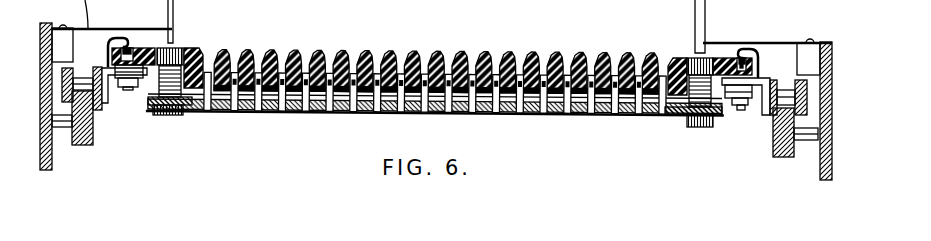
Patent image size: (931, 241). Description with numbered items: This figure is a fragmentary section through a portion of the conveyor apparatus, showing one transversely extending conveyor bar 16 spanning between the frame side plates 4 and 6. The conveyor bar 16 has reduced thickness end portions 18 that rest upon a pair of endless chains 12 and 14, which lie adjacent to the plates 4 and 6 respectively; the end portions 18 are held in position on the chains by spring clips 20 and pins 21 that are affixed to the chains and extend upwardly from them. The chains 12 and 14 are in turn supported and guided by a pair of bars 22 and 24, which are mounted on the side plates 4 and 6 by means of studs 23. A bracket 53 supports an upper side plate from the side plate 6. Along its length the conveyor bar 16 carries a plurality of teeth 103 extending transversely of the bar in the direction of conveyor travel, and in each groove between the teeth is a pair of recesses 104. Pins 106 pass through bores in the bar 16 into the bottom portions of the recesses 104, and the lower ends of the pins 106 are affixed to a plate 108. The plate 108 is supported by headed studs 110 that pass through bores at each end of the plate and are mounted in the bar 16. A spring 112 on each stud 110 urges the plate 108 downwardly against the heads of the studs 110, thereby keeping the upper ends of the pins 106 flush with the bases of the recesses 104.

The frame side plate 4 is at (45, 168).
The frame side plate 6 is at (822, 176).
The endless chain 12 is at (101, 108).
The endless chain 14 is at (772, 116).
The conveyor bar 16 is at (188, 49).
The reduced thickness end portion 18 is at (140, 49).
The spring clip 20 is at (125, 37).
The pin 21 is at (742, 57).
The bar 22 is at (79, 146).
The stud 23 is at (62, 128).
The bar 24 is at (778, 158).
The bracket 53 is at (790, 41).
The tooth 103 is at (532, 58).
The recess 104 is at (352, 70).
The pin 106 is at (280, 70).
The plate 108 is at (245, 113).
The headed stud 110 is at (170, 114).
The spring 112 is at (185, 101).